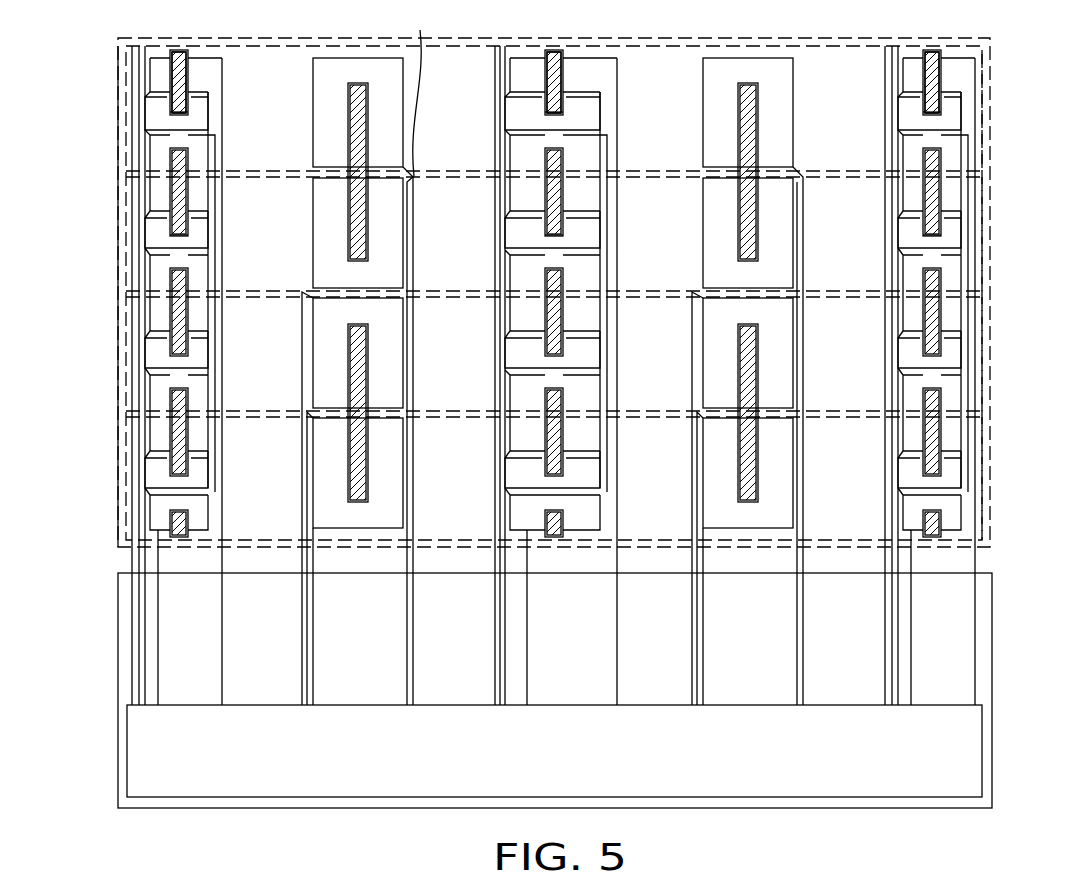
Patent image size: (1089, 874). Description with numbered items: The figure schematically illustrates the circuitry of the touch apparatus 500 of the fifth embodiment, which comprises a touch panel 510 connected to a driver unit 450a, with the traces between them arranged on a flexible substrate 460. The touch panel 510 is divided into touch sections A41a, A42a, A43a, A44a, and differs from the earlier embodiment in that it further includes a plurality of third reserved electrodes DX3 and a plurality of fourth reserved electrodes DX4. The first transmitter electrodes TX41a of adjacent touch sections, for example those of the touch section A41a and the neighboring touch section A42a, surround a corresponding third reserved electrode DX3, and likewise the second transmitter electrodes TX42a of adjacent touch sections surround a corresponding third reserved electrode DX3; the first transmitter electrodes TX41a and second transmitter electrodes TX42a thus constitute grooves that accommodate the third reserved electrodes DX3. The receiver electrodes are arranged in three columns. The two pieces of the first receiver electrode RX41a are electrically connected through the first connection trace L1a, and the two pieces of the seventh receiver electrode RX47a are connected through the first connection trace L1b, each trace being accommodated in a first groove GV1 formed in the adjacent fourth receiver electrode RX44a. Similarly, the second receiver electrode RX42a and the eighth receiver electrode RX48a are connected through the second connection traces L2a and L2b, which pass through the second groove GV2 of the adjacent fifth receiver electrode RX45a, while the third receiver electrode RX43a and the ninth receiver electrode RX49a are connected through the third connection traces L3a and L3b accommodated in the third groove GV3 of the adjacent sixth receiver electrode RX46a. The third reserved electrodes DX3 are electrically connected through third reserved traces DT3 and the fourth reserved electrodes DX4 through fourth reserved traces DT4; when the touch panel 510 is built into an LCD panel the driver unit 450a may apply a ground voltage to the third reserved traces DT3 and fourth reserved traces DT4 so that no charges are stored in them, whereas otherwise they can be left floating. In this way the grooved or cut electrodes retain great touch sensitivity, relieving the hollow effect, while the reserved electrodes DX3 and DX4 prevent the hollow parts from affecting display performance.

The touch panel 510 is at (996, 58).
The fourth reserved traces DT4 is at (118, 46).
The third reserved traces DT3 is at (420, 357).
The fourth reserved electrodes DX4 is at (178, 62).
The third reserved electrodes DX3 is at (356, 155).
The first receiver electrode RX41a is at (150, 76).
The fourth receiver electrode RX44a is at (145, 113).
The seventh receiver electrode RX47a is at (150, 151).
The second receiver electrode RX42a is at (510, 76).
The fifth receiver electrode RX45a is at (505, 113).
The eighth receiver electrode RX48a is at (510, 151).
The third receiver electrode RX43a is at (903, 76).
The sixth receiver electrode RX46a is at (898, 113).
The ninth receiver electrode RX49a is at (903, 151).
The first transmitter electrode TX41a is at (357, 381).
The second transmitter electrode TX42a is at (747, 381).
The first groove GV1 is at (189, 88).
The second groove GV2 is at (565, 90).
The third groove GV3 is at (943, 92).
The first connection trace L1a is at (190, 114).
The first connection trace L1b is at (190, 237).
The second connection trace L2a is at (567, 112).
The second connection trace L2b is at (567, 236).
The third connection trace L3a is at (945, 114).
The third connection trace L3b is at (945, 236).
The touch section A41a is at (988, 150).
The touch section A42a is at (988, 270).
The touch section A43a is at (988, 392).
The touch section A44a is at (988, 512).
The flexible substrate 460 is at (992, 676).
The driver unit 450a is at (983, 754).
The touch apparatus 500 is at (1078, 822).